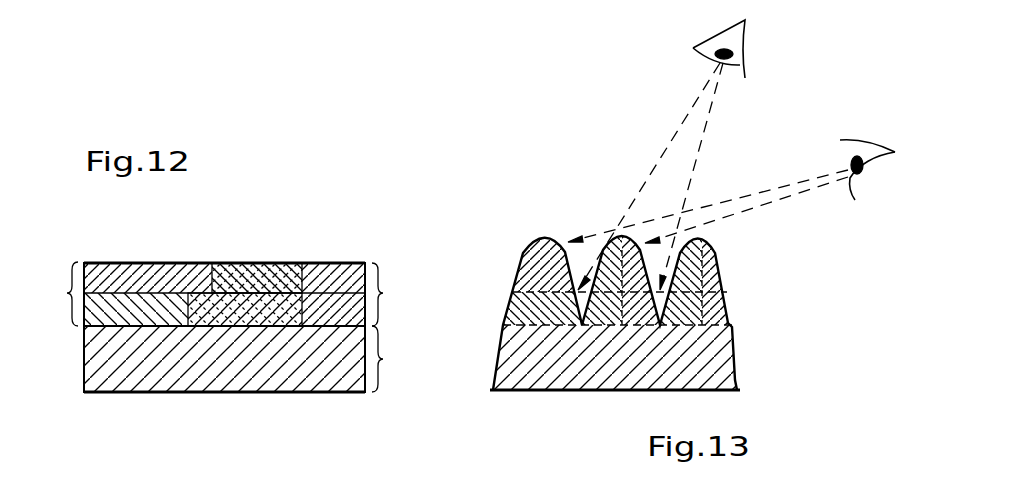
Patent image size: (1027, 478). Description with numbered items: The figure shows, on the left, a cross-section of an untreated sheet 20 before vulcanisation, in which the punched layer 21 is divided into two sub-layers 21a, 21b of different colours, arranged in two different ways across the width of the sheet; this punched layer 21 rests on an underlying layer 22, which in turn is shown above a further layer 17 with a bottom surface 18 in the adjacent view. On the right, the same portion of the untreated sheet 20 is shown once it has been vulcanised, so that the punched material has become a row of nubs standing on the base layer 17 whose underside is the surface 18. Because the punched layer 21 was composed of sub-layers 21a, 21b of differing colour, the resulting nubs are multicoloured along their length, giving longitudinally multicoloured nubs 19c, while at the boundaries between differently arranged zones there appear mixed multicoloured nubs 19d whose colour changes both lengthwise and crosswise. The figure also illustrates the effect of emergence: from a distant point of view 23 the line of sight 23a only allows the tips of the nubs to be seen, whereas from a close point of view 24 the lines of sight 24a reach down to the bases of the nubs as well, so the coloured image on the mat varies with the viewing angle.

In FIG. 13, the substrate layer 17 is at (738, 345).
In FIG. 13, the bottom surface 18 is at (723, 373).
In FIG. 13, the longitudinally multicoloured nubs 19c is at (533, 242).
In FIG. 13, the mixed multicoloured nubs 19d is at (607, 238).
In FIG. 12, the untreated sheet 20 is at (258, 263).
In FIG. 12, the punched layer 21 is at (68, 291).
In FIG. 12, the sub-layer 21a is at (248, 302).
In FIG. 12, the sub-layer 21b is at (122, 263).
In FIG. 12, the base layer 22 is at (95, 358).
In FIG. 13, the distant point of view 23 is at (880, 150).
In FIG. 13, the line of sight 23a is at (743, 210).
In FIG. 13, the close point of view 24 is at (720, 36).
In FIG. 13, the lines of sight 24a is at (657, 155).